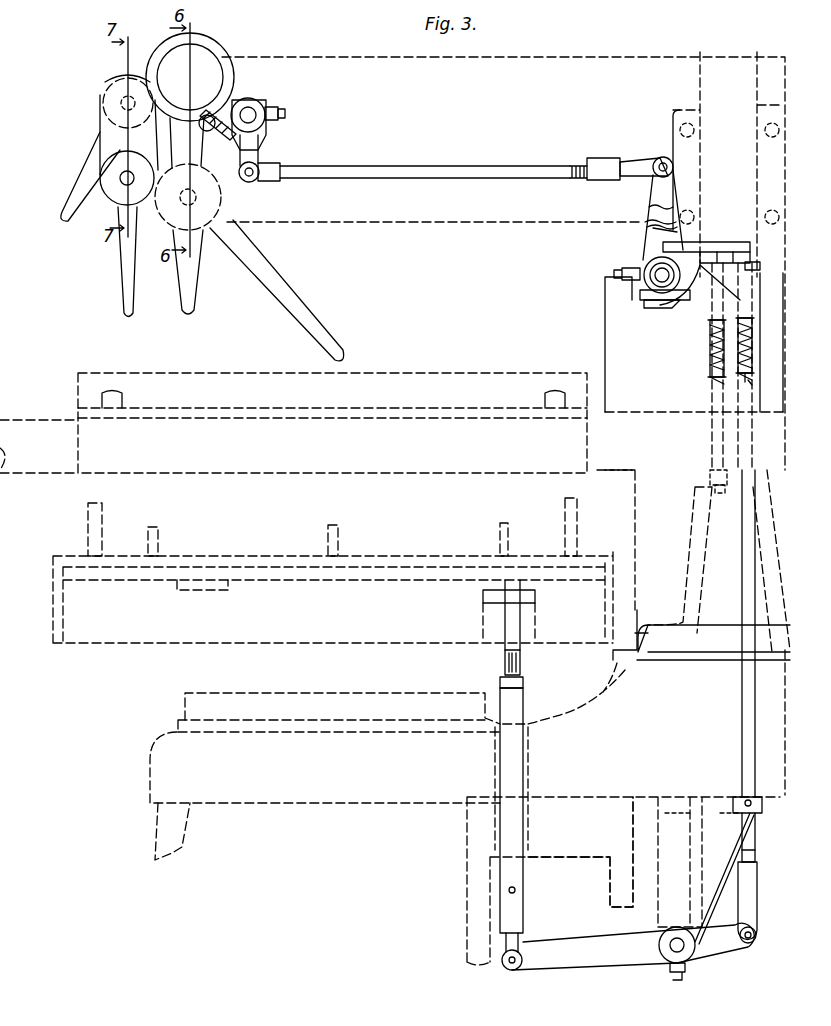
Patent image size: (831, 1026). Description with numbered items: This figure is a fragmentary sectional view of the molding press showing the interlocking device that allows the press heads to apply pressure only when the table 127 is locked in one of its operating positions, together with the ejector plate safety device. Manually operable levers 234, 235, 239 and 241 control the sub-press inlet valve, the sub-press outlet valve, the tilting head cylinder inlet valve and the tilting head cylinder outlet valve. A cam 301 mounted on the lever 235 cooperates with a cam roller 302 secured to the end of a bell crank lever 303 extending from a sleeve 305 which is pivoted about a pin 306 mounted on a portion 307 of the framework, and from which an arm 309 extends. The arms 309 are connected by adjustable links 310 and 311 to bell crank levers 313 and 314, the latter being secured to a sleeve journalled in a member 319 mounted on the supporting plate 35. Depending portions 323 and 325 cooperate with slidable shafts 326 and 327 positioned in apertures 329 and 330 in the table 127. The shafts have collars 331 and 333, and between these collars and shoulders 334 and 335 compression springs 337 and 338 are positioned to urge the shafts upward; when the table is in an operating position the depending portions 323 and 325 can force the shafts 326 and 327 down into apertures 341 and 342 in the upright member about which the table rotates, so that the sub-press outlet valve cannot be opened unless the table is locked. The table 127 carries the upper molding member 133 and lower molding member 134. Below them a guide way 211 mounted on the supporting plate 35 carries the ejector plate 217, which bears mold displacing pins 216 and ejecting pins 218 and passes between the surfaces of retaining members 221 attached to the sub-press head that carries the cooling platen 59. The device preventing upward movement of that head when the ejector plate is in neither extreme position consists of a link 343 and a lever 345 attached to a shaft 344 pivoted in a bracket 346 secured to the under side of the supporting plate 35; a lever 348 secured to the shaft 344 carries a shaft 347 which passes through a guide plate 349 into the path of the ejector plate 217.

The cam 301 is at (220, 52).
The portion of the framework 307 is at (382, 70).
The cam roller 302 is at (213, 117).
The sleeve 305 is at (250, 108).
The pin 306 is at (285, 113).
The arm 309 is at (262, 140).
The adjustable link 310 is at (370, 165).
The adjustable link 311 is at (415, 170).
The bell crank lever 303 is at (232, 176).
The manually operable lever 241 is at (75, 198).
The manually operable lever 239 is at (124, 290).
The manually operable lever 235 is at (199, 295).
The manually operable lever 234 is at (311, 305).
The bell crank lever 313 is at (660, 197).
The bell crank lever 314 is at (660, 214).
The member 319 is at (733, 242).
The depending portion 325 is at (760, 268).
The depending portion 323 is at (645, 256).
The aperture 329 is at (657, 307).
The aperture 330 is at (750, 290).
The collar 331 is at (712, 328).
The collar 333 is at (740, 337).
The compression spring 337 is at (713, 357).
The shoulder 334 is at (740, 372).
The compression spring 338 is at (735, 381).
The shoulder 335 is at (748, 383).
The table 127 is at (28, 422).
The upper molding member 133 is at (405, 372).
The lower molding member 134 is at (425, 425).
The guide way 211 is at (65, 605).
The retaining member 221 is at (60, 548).
The mold displacing pin 216 is at (95, 520).
The ejecting pin 218 is at (160, 540).
The ejector plate 217 is at (272, 555).
The slidable shaft 326 is at (708, 472).
The slidable shaft 327 is at (718, 490).
The aperture 341 is at (712, 510).
The aperture 342 is at (750, 500).
The guide plate 349 is at (483, 596).
The cooling platen 59 is at (265, 708).
The supporting plate 35 is at (178, 768).
The shaft 347 is at (515, 818).
The bracket 346 is at (662, 848).
The lever 348 is at (592, 960).
The shaft 344 is at (673, 950).
The lever 345 is at (720, 948).
The link 343 is at (752, 903).